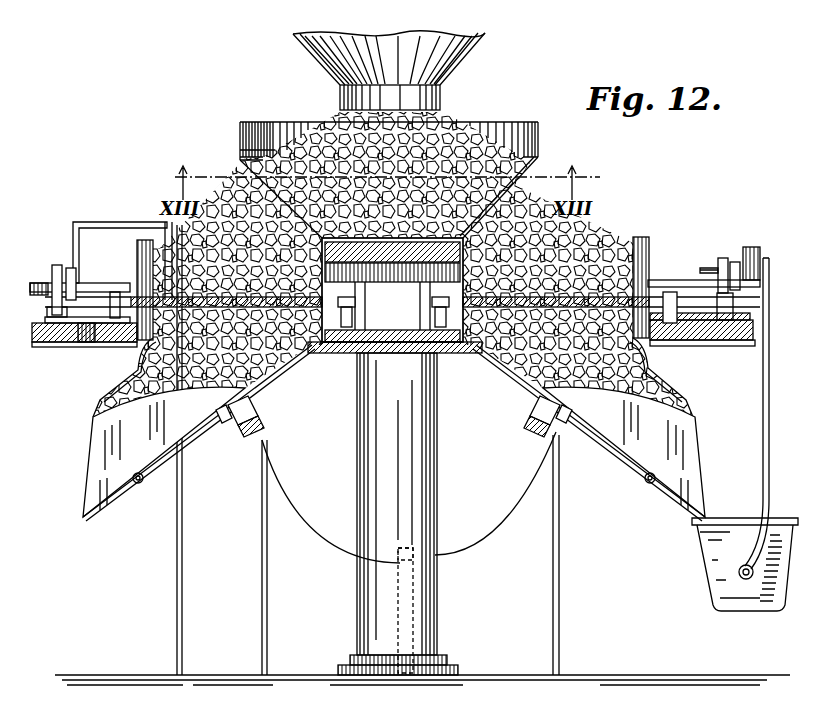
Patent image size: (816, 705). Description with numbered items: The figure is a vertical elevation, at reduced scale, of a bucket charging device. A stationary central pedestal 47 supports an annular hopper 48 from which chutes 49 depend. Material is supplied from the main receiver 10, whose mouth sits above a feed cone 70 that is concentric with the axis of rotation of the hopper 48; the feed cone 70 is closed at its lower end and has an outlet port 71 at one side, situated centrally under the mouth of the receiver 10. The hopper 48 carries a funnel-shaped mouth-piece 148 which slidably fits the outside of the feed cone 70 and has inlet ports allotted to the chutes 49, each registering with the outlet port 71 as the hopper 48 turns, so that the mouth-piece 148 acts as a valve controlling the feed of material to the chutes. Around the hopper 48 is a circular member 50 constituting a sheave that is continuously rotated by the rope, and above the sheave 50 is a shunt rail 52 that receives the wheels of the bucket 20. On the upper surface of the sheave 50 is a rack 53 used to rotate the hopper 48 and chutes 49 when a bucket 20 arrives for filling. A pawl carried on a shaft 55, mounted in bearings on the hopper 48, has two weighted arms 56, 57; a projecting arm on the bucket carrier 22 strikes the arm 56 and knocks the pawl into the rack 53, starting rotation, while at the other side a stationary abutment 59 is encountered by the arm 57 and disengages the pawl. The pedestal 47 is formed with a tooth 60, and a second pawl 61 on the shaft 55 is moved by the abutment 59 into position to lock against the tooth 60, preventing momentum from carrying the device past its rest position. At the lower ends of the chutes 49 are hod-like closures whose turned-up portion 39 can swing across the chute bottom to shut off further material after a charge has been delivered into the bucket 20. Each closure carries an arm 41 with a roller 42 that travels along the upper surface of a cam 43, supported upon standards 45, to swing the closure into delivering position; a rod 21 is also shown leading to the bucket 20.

The main receiver 10 is at (330, 33).
The feed cone 70 is at (389, 120).
The outlet port 71 is at (250, 163).
The funnel-shaped mouth-piece 148 is at (540, 162).
The stationary abutment 59 is at (110, 222).
The annular hopper 48 is at (146, 240).
The weighted arm 56 is at (60, 268).
The shunt rail 52 is at (40, 283).
The weighted arm 57 is at (72, 283).
The shaft 55 is at (697, 300).
The carrier 22 is at (752, 322).
The rod 21 is at (766, 430).
The bucket 20 is at (718, 578).
The circular member 50 is at (40, 347).
The rack 53 is at (86, 343).
The chute 49 is at (117, 395).
The turned-up portion 39 is at (95, 425).
The roller 42 is at (244, 408).
The arm 41 is at (222, 428).
The second pawl 61 is at (332, 345).
The tooth 60 is at (338, 353).
The central pedestal 47 is at (430, 412).
The cam 43 is at (362, 565).
The standard 45 is at (553, 578).